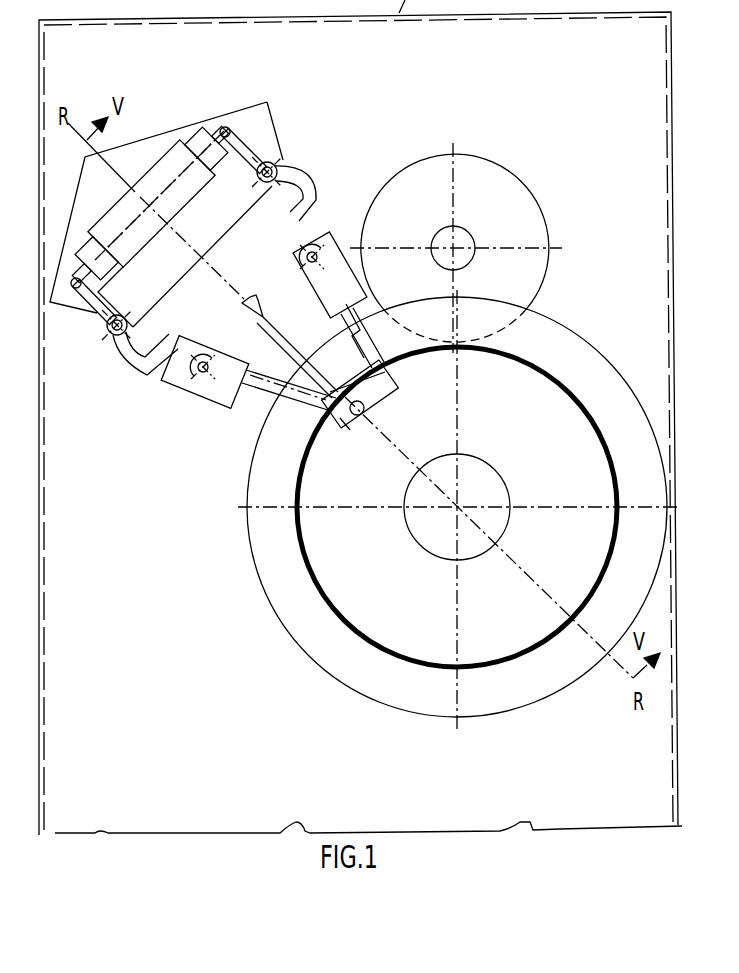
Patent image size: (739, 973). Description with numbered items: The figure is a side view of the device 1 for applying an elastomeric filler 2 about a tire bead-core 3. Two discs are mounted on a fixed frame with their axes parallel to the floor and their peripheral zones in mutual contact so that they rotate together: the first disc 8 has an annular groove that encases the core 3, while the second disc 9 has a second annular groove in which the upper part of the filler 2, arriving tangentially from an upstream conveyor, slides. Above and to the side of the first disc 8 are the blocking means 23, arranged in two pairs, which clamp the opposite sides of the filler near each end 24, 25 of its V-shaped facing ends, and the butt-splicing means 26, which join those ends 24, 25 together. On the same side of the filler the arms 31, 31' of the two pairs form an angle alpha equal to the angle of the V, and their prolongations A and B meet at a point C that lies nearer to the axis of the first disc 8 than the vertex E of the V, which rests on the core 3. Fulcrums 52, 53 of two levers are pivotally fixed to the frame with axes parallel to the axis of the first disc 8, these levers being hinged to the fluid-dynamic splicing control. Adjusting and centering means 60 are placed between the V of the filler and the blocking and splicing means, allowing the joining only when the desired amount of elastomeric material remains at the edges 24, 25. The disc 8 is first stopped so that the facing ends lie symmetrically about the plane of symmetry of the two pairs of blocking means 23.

The device 1 is at (548, 85).
The elastomeric filler 2 is at (520, 333).
The tire bead-core 3 is at (545, 362).
The first disc 8 is at (530, 408).
The second disc 9 is at (487, 182).
The blocking means 23 is at (292, 283).
The end of the V 24 is at (289, 374).
The end of the V 25 is at (337, 336).
The butt-splicing means 26 is at (140, 200).
The arm 31 is at (377, 394).
The arm 31' is at (349, 445).
The fulcrum 52 is at (277, 172).
The fulcrum 53 is at (115, 333).
The adjusting and centering means 60 is at (253, 300).
The prolongation of arm A is at (320, 392).
The prolongation of arm B is at (352, 356).
The meeting point of prolongations C is at (365, 410).
The vertex of the V E is at (317, 380).